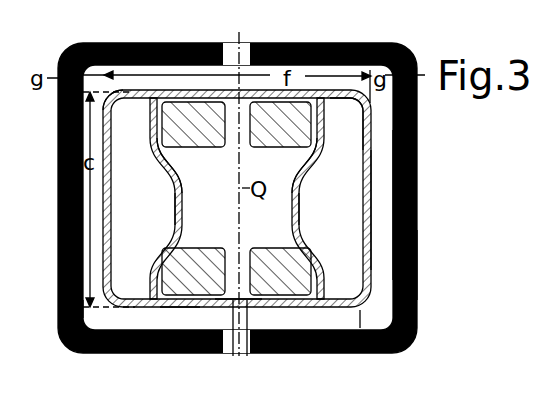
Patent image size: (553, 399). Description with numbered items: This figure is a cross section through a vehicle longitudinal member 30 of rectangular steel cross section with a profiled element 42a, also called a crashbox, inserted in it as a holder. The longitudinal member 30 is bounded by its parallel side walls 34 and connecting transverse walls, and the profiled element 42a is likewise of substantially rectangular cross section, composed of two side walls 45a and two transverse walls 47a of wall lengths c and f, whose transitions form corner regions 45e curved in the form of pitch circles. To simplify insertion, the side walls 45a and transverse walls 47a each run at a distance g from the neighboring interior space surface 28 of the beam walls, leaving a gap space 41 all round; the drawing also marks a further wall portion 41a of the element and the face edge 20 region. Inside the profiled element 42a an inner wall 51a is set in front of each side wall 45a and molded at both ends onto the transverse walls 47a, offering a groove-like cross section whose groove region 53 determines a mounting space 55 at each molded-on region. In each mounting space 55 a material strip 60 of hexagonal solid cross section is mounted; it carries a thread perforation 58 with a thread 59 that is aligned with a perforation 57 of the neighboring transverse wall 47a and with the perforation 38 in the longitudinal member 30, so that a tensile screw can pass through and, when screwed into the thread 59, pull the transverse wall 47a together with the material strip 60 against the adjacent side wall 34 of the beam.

The right face edge 20 is at (377, 328).
The interior space surface 28 is at (84, 318).
The vehicle longitudinal member 30 is at (420, 175).
The side wall 34 is at (418, 289).
The perforation 38 is at (236, 338).
The gap space 41 is at (378, 126).
The core wall 41a is at (117, 88).
The profiled element 42a is at (376, 208).
The side wall 45a is at (112, 277).
The corner region 45e is at (360, 102).
The transverse wall 47a is at (148, 100).
The inner wall 51a is at (154, 148).
The groove region 53 is at (174, 205).
The mounting space 55 is at (387, 152).
The perforation 57 is at (247, 303).
The thread perforation 58 is at (249, 142).
The thread 59 is at (203, 148).
The material strip 60 is at (195, 137).